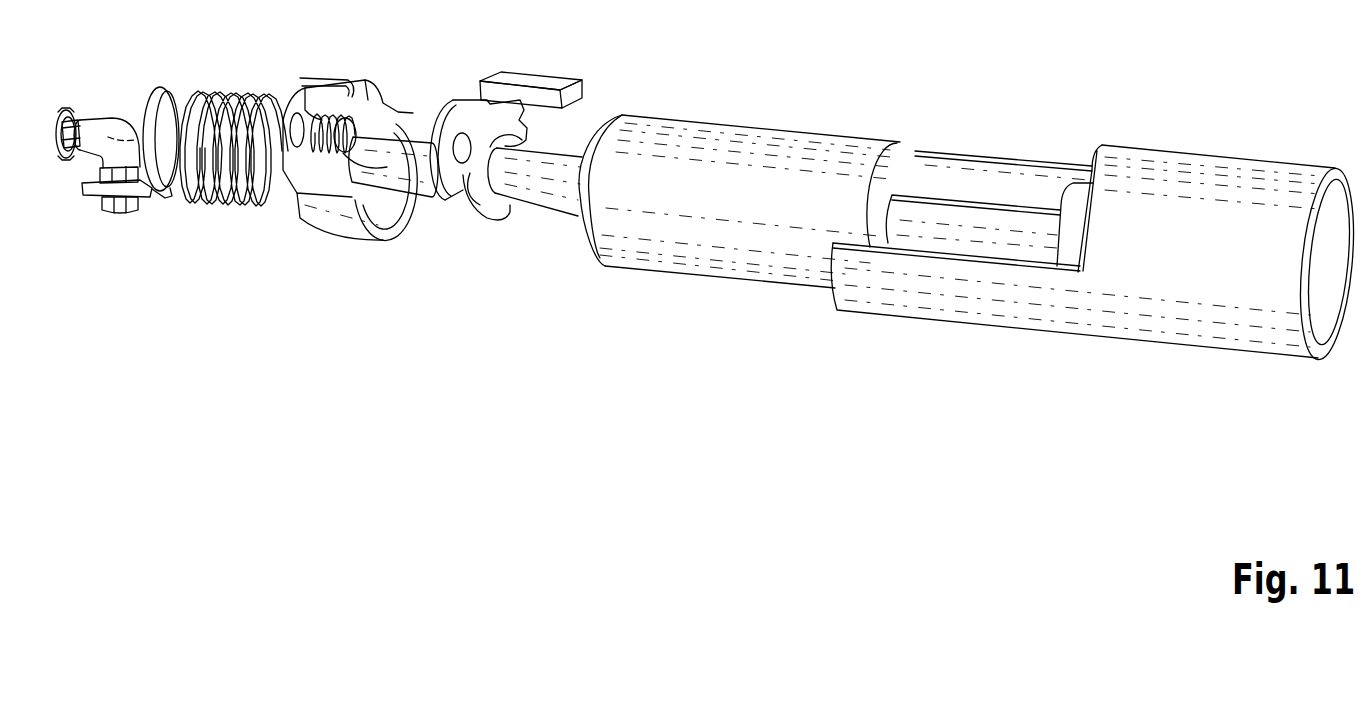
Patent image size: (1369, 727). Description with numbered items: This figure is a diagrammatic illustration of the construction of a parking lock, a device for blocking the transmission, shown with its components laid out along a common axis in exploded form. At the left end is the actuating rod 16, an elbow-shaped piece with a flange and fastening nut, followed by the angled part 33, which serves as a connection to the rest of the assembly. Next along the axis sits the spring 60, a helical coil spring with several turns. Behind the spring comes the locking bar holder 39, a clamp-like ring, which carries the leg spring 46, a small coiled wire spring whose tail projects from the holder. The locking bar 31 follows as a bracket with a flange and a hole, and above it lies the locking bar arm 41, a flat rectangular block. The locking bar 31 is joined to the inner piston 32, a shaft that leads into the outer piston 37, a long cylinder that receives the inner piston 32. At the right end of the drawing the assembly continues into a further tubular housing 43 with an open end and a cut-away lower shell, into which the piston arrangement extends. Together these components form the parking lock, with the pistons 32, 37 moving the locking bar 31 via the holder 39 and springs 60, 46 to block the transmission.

The actuating rod 16 is at (105, 132).
The angled part 33 is at (158, 90).
The spring 60 is at (227, 100).
The leg spring 46 is at (317, 80).
The locking bar holder 39 is at (365, 107).
The locking bar 31 is at (443, 130).
The locking bar arm 41 is at (530, 80).
The inner piston 32 is at (542, 190).
The outer piston 37 is at (743, 147).
The tube 43 is at (1212, 175).